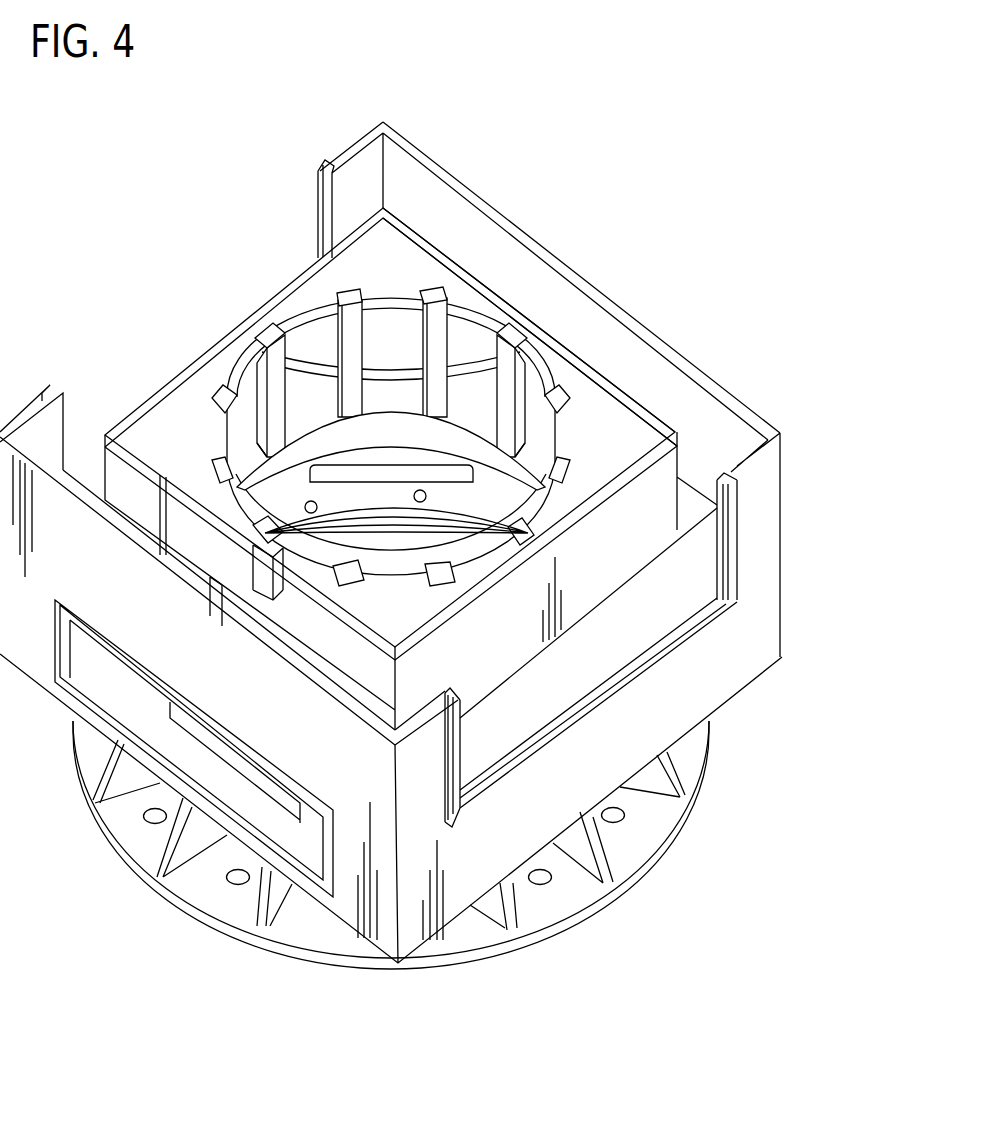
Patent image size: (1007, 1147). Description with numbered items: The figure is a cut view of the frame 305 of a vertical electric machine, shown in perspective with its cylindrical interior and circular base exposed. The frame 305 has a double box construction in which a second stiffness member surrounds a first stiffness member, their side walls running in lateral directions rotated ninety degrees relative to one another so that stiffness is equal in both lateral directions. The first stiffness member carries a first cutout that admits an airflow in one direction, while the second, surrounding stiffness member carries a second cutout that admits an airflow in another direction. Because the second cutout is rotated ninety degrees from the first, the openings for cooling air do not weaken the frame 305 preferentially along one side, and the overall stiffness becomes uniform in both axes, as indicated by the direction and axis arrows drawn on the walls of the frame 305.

The frame 305 is at (450, 545).